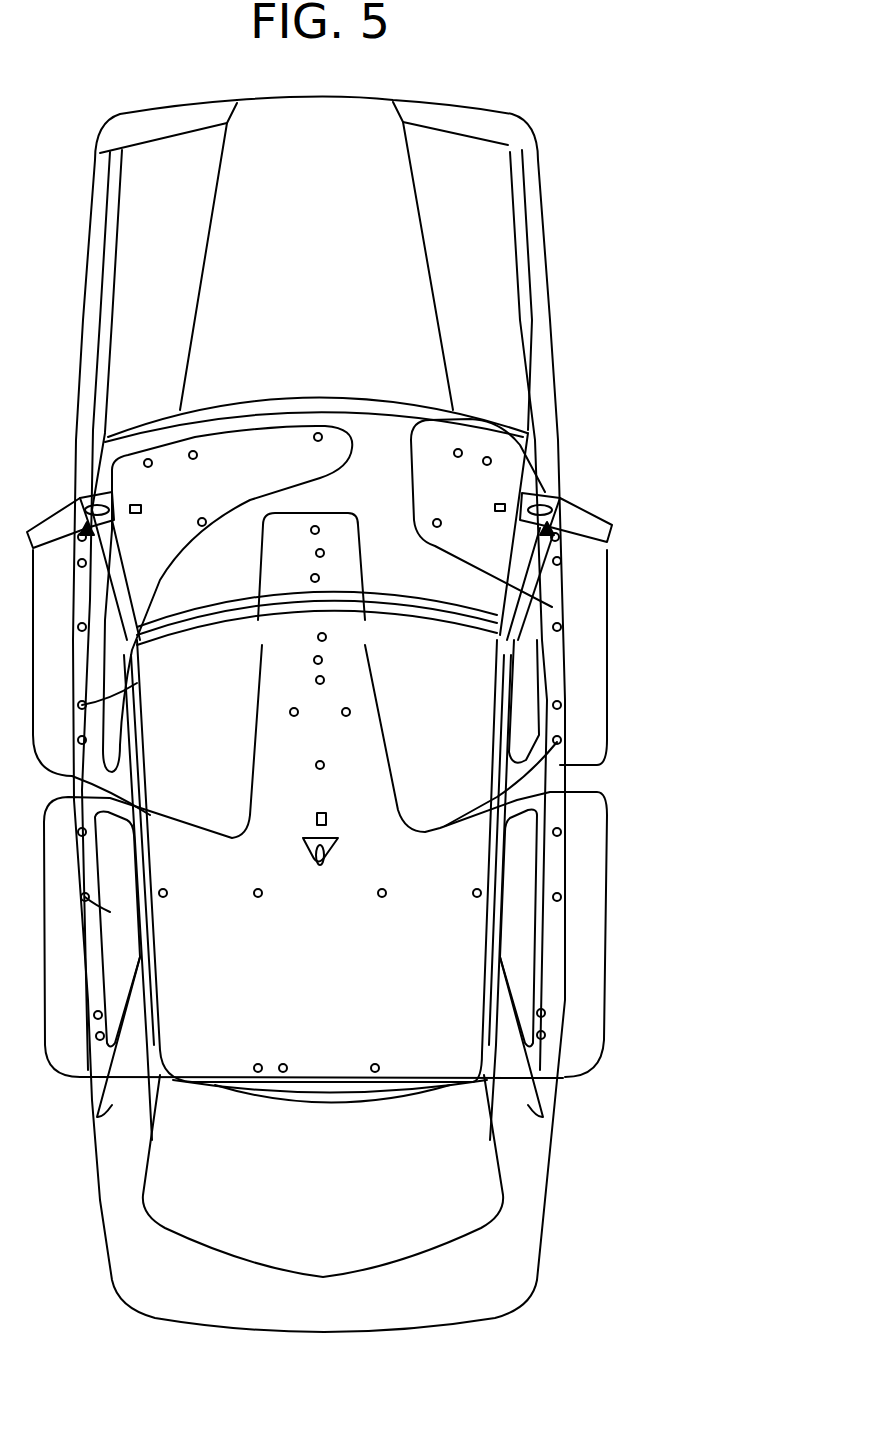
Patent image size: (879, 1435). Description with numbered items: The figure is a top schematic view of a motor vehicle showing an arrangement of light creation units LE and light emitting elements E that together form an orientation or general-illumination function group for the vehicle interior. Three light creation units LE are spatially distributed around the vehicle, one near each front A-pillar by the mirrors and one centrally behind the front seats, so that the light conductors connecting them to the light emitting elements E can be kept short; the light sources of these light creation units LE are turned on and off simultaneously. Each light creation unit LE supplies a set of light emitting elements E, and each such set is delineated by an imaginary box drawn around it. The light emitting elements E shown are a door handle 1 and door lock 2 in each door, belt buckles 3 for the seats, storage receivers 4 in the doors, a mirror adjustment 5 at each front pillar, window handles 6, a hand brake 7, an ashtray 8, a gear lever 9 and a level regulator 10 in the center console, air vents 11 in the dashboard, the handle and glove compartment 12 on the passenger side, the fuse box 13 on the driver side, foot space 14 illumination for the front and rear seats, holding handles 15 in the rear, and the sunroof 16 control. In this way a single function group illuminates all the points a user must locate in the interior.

The door handle 1 is at (78, 705).
The door lock 2 is at (78, 740).
The belt buckle 3 is at (290, 712).
The storage receivers 4 is at (569, 897).
The mirror adjustment 5 is at (92, 532).
The window handle 6 is at (78, 563).
The hand brake 7 is at (314, 660).
The ashtray 8 is at (311, 530).
The gear lever 9 is at (324, 553).
The level regulator 10 is at (311, 578).
The air vents 11 is at (148, 467).
The handle and glove compartment 12 is at (454, 453).
The fuse box 13 is at (197, 455).
The foot space 14 is at (198, 522).
The holding handle 15 is at (167, 893).
The sunroof 16 is at (326, 637).
The light emitting elements E is at (120, 801).
The light creation units LE is at (82, 500).